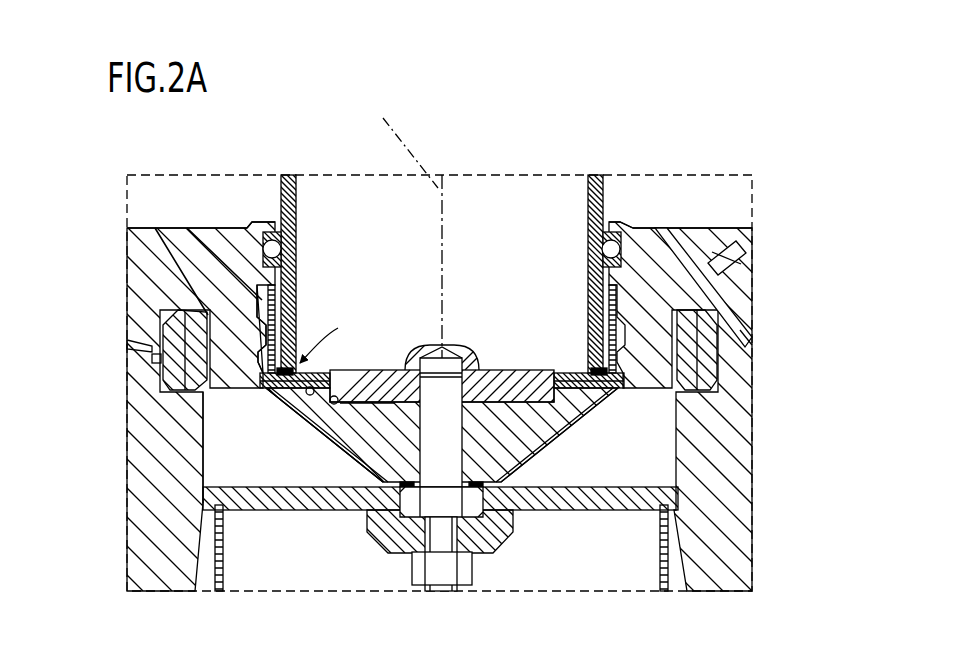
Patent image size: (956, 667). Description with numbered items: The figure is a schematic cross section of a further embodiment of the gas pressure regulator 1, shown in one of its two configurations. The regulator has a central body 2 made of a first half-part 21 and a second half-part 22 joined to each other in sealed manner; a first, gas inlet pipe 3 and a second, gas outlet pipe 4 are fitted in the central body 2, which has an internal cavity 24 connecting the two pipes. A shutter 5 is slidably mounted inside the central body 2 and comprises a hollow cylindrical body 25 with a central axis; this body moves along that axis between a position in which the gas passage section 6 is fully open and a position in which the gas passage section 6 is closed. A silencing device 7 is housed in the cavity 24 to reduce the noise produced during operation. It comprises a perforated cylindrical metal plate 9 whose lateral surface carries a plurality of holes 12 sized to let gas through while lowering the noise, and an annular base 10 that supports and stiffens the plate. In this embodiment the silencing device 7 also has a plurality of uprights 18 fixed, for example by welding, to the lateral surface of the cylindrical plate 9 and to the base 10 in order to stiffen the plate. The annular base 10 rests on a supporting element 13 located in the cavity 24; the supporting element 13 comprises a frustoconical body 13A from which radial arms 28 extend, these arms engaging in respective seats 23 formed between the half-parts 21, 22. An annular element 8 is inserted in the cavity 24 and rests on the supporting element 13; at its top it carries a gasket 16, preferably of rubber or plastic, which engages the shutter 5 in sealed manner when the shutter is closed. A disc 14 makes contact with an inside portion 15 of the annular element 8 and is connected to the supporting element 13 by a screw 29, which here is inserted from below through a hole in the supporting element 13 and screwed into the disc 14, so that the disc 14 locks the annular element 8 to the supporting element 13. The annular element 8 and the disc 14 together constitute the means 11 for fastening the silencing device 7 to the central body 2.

The gas pressure regulator 1 is at (677, 152).
The central body 2 is at (117, 365).
The first, gas inlet pipe 3 is at (476, 168).
The second, gas outlet pipe 4 is at (380, 595).
The shutter 5 is at (292, 192).
The gas passage section 6 is at (277, 310).
The silencing device 7 is at (262, 370).
The annular element 8 is at (226, 457).
The cylindrical metal plate 9 is at (265, 282).
The annular base 10 is at (300, 390).
The means for fastening 11 is at (583, 373).
The holes 12 is at (205, 245).
The supporting element 13 is at (585, 440).
The frustoconical body 13A is at (345, 460).
The disc 14 is at (385, 362).
The inside portion 15 is at (690, 487).
The gasket 16 is at (600, 442).
The uprights 18 is at (262, 288).
The first half-part 21 is at (687, 235).
The second half-part 22 is at (740, 530).
The seats 23 is at (716, 330).
The internal cavity 24 is at (205, 487).
The hollow cylindrical body 25 is at (537, 178).
The radial arms 28 is at (210, 345).
The screw 29 is at (455, 450).